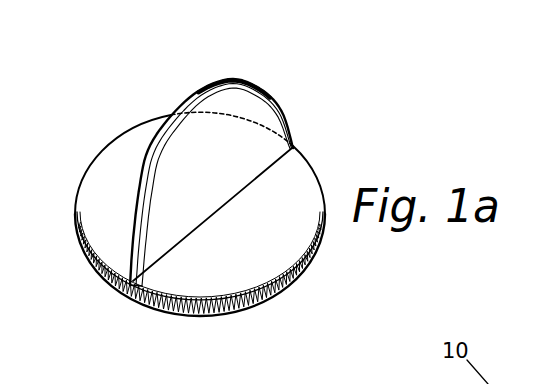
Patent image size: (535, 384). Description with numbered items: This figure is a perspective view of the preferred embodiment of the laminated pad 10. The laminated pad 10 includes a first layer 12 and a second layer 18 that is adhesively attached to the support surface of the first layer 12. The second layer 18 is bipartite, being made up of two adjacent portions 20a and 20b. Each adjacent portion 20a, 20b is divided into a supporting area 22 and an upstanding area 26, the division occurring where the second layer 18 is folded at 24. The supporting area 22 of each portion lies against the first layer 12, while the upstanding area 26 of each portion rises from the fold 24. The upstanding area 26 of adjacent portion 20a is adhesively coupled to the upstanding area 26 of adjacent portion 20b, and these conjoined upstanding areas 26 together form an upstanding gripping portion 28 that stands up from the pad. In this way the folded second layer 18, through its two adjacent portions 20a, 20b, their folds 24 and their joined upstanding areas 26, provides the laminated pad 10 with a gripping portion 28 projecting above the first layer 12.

The laminated pad 10 is at (118, 91).
The first layer 12 is at (300, 278).
The second layer 18 is at (217, 307).
The adjacent portion 20a is at (120, 167).
The adjacent portion 20b is at (280, 163).
The supporting area 22 is at (275, 230).
The fold 24 is at (300, 170).
The upstanding area 26 is at (250, 110).
The gripping portion 28 is at (218, 77).